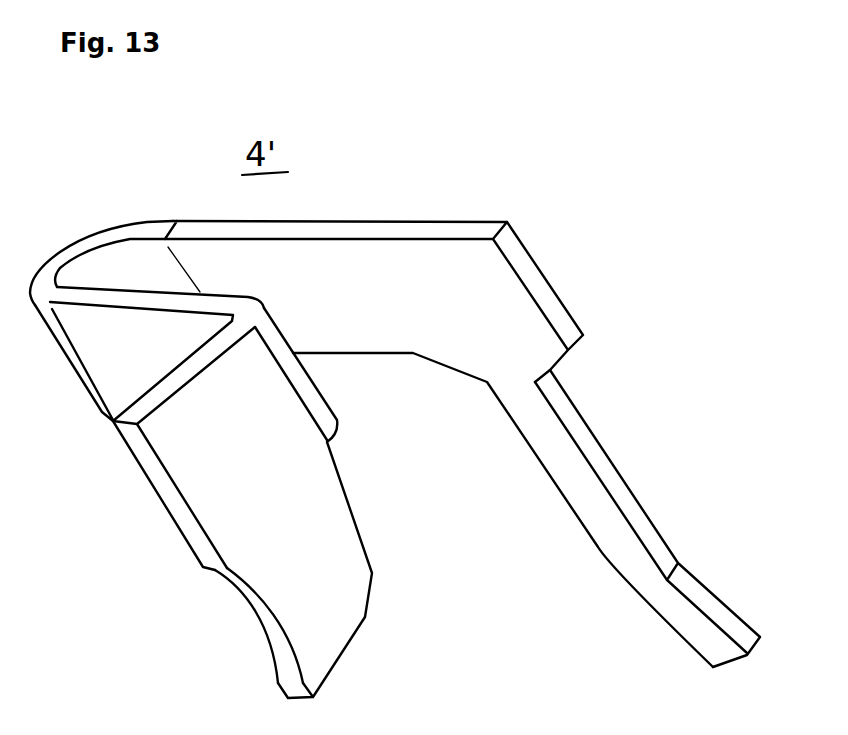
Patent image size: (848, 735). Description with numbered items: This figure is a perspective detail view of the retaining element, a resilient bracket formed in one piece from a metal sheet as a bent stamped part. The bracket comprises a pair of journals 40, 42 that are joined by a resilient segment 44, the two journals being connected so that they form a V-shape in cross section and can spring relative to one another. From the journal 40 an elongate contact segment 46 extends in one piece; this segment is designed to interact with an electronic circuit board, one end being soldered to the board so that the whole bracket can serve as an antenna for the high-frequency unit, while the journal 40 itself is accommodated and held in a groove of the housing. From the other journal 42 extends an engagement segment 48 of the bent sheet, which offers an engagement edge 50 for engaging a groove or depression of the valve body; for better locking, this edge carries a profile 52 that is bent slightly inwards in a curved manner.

The journal 40 is at (412, 262).
The journal 42 is at (117, 345).
The resilient segment 44 is at (95, 238).
The contact segment 46 is at (585, 435).
The engagement segment 48 is at (307, 505).
The engagement edge 50 is at (197, 535).
The profile 52 is at (270, 615).